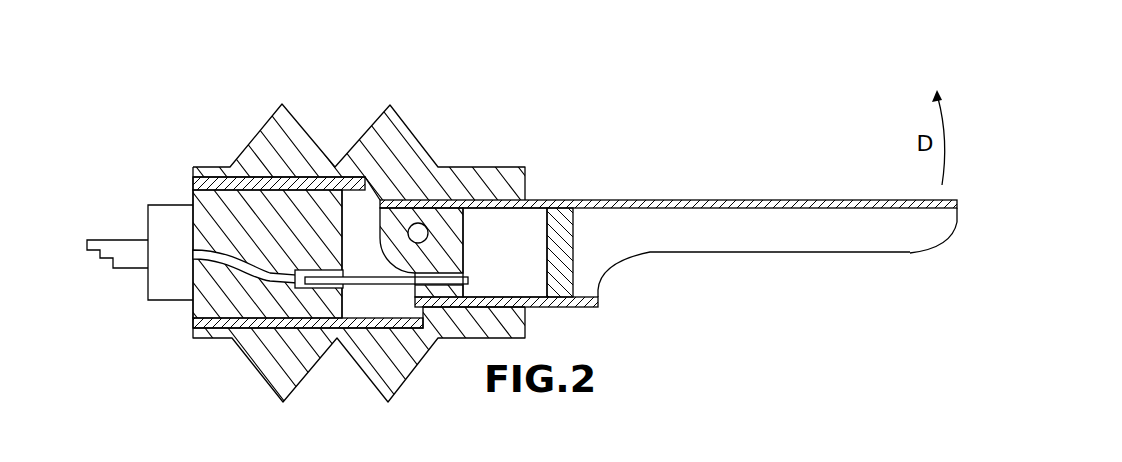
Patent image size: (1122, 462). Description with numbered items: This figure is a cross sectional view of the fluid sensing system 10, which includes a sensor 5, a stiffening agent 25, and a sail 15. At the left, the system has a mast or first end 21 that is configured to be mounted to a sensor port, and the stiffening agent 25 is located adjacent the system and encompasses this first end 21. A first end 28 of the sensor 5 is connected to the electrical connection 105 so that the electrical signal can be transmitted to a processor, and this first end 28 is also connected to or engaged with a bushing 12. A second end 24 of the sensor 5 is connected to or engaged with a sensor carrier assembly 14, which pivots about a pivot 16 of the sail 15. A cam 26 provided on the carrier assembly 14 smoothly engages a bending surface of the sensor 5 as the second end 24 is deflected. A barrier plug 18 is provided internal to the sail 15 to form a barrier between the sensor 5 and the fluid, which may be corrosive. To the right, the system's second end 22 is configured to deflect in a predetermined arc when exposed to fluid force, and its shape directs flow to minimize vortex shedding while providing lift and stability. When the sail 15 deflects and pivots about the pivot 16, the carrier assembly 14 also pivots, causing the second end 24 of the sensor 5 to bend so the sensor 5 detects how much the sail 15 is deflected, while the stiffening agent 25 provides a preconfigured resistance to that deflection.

The fluid sensing system 10 is at (680, 131).
The first end 21 is at (156, 164).
The stiffening agent 25 is at (399, 108).
The bushing 12 is at (208, 300).
The electrical connection 105 is at (120, 238).
The first end 28 is at (325, 267).
The second end 24 is at (466, 268).
The cam 26 is at (378, 265).
The pivot 16 is at (418, 222).
The sensor carrier assembly 14 is at (466, 233).
The barrier plug 18 is at (575, 226).
The sensor 5 is at (357, 286).
The sail 15 is at (811, 200).
The second end 22 is at (933, 268).